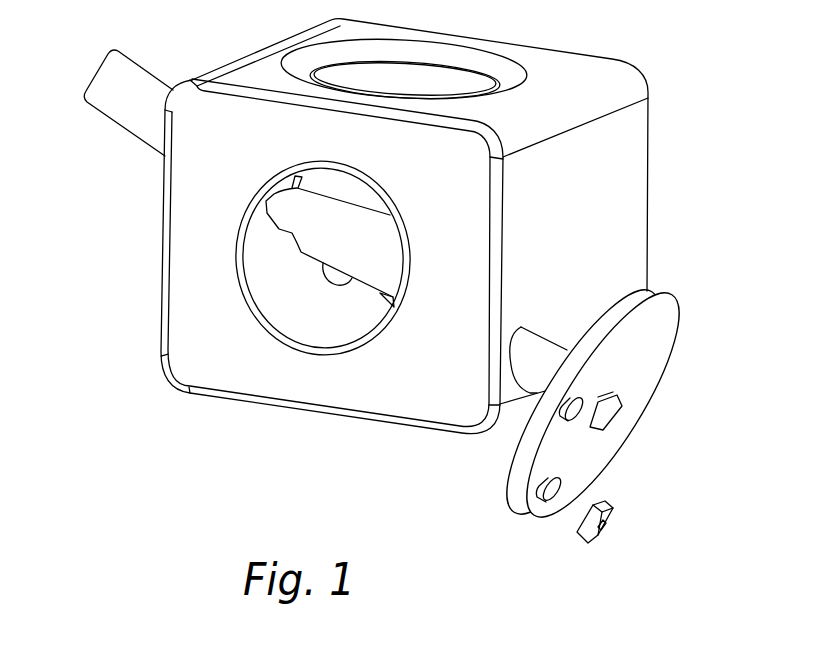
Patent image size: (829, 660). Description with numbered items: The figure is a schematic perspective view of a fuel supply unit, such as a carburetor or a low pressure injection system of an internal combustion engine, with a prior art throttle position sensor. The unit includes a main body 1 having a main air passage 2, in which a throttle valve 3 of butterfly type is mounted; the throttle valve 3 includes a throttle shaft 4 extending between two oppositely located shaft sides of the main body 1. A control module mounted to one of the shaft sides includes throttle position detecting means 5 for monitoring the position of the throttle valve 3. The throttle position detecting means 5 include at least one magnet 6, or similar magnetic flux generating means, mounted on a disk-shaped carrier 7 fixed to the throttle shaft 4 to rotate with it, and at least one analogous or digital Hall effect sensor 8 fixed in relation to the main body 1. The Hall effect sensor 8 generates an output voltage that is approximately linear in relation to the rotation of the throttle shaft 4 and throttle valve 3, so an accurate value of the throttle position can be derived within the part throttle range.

The main body 1 is at (112, 394).
The main air passage 2 is at (330, 252).
The throttle valve 3 is at (327, 313).
The throttle shaft 4 is at (128, 112).
The throttle position detecting means 5 is at (597, 438).
The magnet 6 is at (563, 413).
The disk-shaped carrier 7 is at (647, 298).
The Hall effect sensor 8 is at (622, 510).